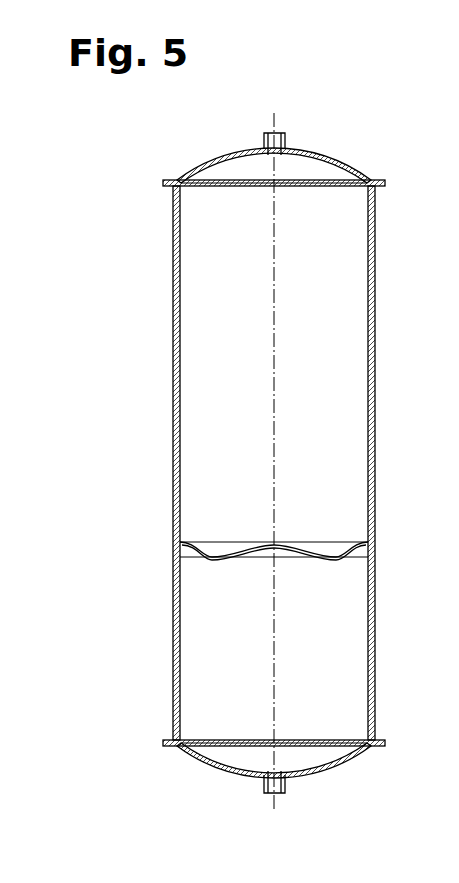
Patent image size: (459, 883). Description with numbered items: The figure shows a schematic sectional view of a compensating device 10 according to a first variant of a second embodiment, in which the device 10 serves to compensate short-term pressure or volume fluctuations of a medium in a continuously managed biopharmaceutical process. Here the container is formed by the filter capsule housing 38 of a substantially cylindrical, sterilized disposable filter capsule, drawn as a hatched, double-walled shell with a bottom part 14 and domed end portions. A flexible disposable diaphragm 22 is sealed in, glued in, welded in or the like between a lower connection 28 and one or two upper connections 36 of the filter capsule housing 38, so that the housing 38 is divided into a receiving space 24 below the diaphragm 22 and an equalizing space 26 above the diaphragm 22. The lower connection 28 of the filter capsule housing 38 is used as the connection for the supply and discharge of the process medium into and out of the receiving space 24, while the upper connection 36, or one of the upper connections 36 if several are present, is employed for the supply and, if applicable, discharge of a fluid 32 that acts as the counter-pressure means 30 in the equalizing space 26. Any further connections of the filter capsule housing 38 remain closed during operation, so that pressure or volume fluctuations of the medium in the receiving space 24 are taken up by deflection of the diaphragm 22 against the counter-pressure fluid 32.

The device for compensating pressure or volume fluctuations 10 is at (354, 134).
The bottom part 14 is at (215, 463).
The filter capsule housing 38 is at (166, 350).
The counter-pressure means 30 is at (215, 463).
The fluid 32 is at (197, 390).
The flexible disposable diaphragm 22 is at (180, 560).
The receiving space 24 is at (253, 661).
The equalizing space 26 is at (251, 312).
The lower connection 28 is at (262, 785).
The upper connection 36 is at (263, 145).